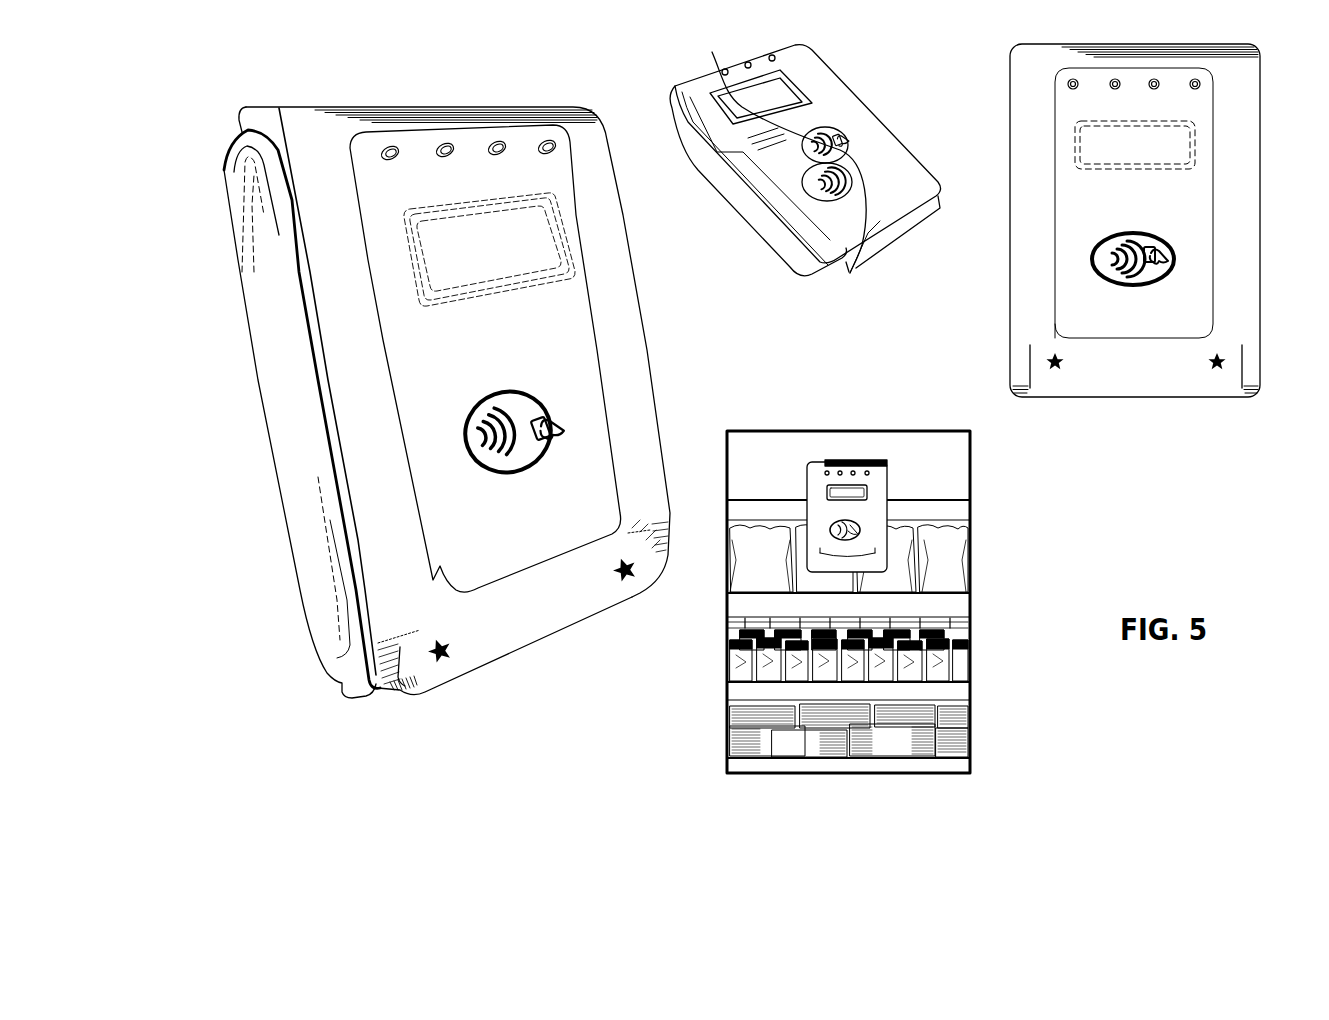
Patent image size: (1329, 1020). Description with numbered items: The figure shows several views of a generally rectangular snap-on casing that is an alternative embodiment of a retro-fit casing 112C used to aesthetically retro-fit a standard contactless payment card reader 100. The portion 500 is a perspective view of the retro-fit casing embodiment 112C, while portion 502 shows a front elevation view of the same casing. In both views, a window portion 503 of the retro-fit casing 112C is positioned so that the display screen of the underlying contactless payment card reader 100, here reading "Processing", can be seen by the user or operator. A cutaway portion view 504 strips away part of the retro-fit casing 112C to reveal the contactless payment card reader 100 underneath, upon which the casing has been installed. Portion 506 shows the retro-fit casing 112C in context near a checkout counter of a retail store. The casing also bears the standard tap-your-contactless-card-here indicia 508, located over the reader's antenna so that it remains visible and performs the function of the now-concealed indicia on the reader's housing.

The perspective view portion 500 is at (318, 707).
The window portion 503 is at (555, 196).
The indicia 508 is at (548, 393).
The retro-fit casing embodiment 112C is at (641, 302).
The contactless payment card reader 100 is at (760, 226).
The cutaway portion view 504 is at (878, 85).
The front elevation view portion 502 is at (1003, 71).
The context view portion 506 is at (978, 513).